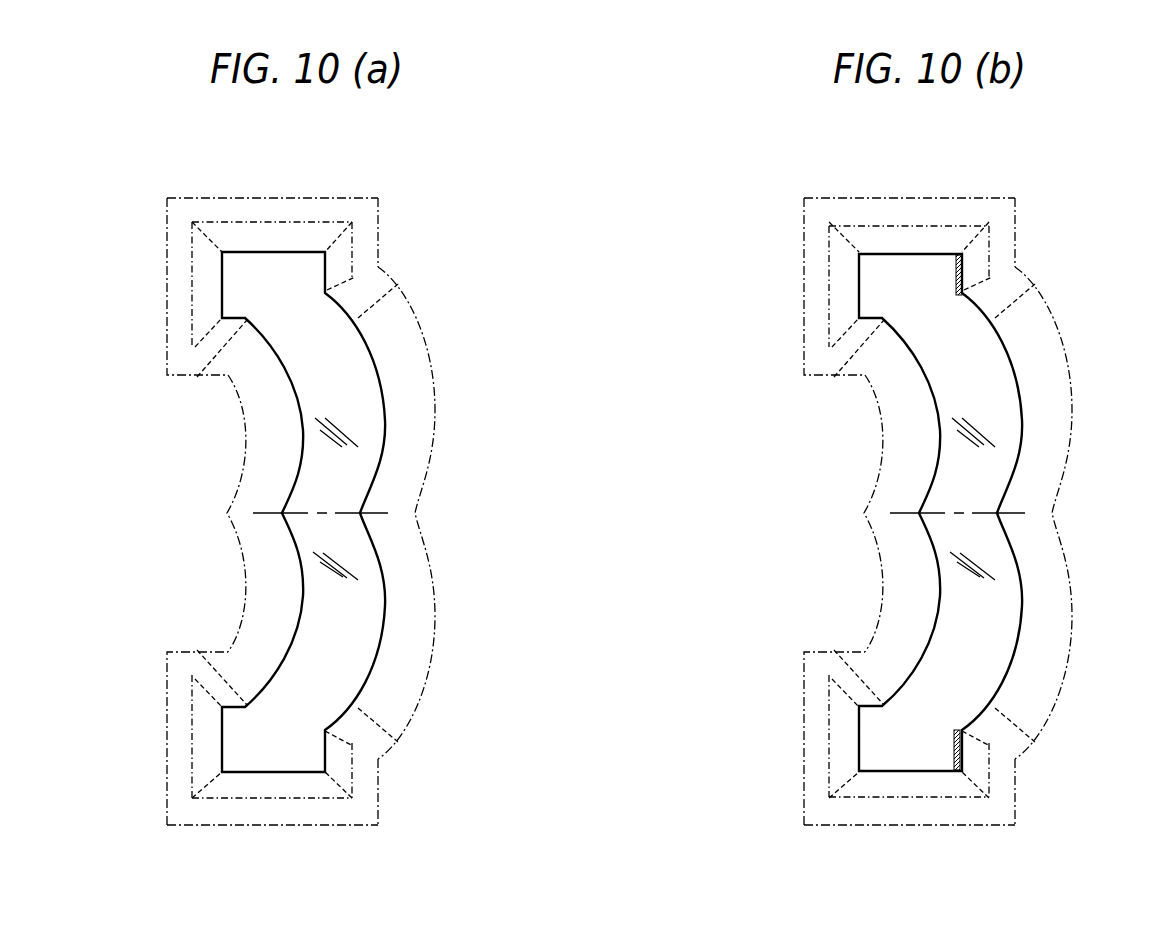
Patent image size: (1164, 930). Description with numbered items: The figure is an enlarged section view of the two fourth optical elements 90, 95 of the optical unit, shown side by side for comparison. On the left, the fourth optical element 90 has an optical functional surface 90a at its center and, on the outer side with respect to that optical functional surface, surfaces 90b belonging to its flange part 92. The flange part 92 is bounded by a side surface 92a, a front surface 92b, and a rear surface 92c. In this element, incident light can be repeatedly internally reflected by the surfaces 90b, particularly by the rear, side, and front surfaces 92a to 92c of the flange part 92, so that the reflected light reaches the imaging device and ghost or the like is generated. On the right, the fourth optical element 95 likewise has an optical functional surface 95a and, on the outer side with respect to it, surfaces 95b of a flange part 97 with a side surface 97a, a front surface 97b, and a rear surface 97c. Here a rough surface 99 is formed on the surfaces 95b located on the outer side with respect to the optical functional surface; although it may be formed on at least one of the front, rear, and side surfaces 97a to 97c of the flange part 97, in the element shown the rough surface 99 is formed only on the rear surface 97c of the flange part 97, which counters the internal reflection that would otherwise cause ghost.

The fourth optical element 90 is at (150, 207).
The optical functional surface 90a is at (228, 547).
The surface located on the outer side with respect to the optical functional surface 90b is at (273, 197).
The flange part 92 is at (233, 262).
The side surface of the flange part 92a is at (192, 283).
The front surface of the flange part 92b is at (318, 222).
The rear surface of the flange part 92c is at (352, 240).
The fourth optical element 95 is at (938, 517).
The optical functional surface 95a is at (965, 513).
The surface located on the outer side with respect to the optical functional surface 95b is at (909, 517).
The flange part 97 is at (922, 519).
The side surface of the flange part 97a is at (788, 511).
The front surface of the flange part 97b is at (909, 514).
The rear surface of the flange part 97c is at (1033, 506).
The rough surface 99 is at (1009, 504).